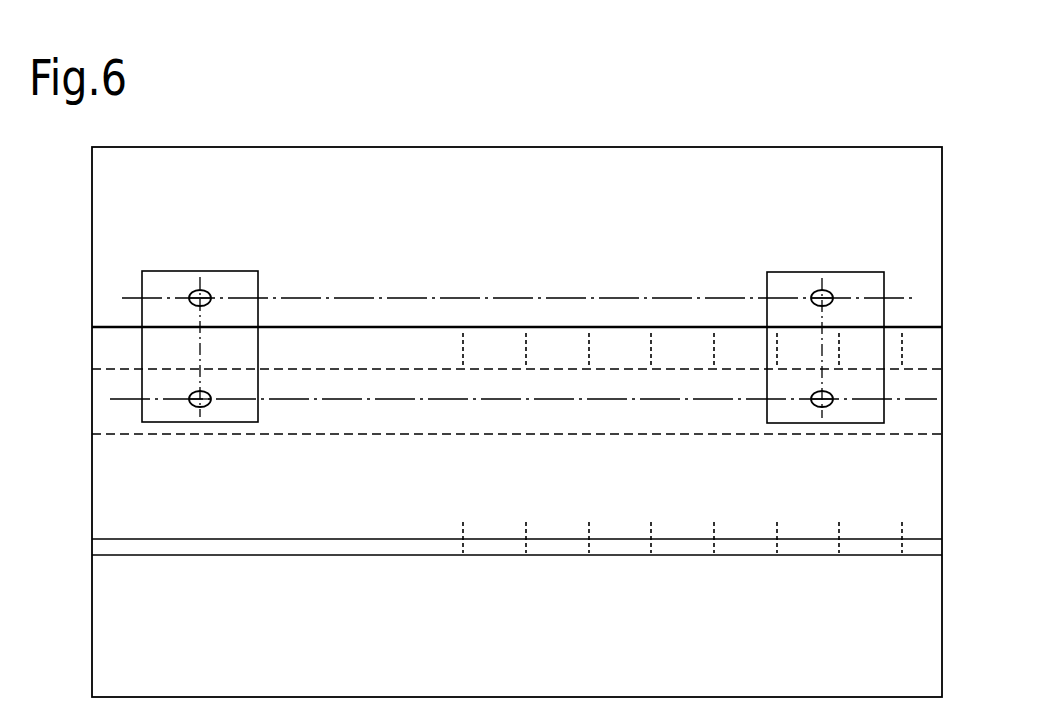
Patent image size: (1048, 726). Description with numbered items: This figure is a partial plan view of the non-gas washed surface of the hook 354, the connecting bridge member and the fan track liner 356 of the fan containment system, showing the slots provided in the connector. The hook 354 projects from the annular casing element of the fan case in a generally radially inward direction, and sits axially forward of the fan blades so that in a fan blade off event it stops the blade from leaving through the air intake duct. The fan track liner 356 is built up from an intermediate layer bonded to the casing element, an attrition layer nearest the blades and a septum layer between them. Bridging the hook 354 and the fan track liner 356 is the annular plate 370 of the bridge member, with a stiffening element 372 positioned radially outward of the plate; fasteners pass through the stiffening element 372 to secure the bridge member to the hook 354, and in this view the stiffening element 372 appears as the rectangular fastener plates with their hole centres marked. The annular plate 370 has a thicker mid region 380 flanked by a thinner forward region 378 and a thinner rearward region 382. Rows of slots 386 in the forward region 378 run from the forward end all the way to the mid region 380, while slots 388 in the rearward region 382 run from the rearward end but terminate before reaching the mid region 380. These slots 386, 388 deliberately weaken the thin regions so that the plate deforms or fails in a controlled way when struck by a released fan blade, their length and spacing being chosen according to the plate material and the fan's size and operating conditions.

The hook 354 is at (505, 208).
The fan track liner 356 is at (515, 633).
The annular plate 370 is at (517, 490).
The stiffening element 372 is at (143, 316).
The forward region 378 is at (942, 355).
The mid region 380 is at (930, 410).
The rearward region 382 is at (934, 511).
The slots 386 is at (714, 347).
The slots 388 is at (714, 532).